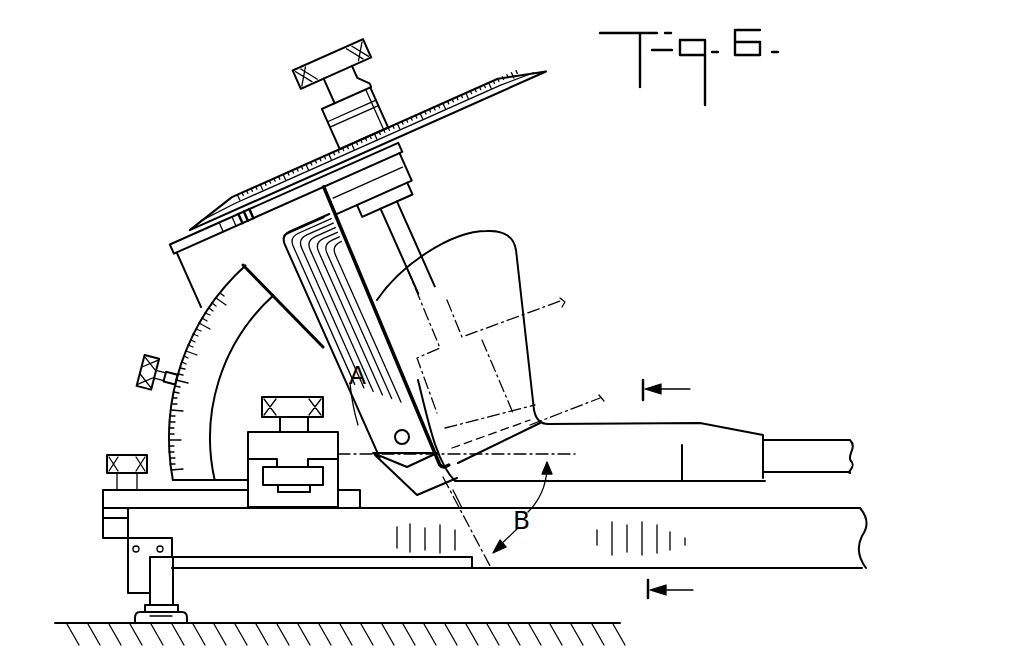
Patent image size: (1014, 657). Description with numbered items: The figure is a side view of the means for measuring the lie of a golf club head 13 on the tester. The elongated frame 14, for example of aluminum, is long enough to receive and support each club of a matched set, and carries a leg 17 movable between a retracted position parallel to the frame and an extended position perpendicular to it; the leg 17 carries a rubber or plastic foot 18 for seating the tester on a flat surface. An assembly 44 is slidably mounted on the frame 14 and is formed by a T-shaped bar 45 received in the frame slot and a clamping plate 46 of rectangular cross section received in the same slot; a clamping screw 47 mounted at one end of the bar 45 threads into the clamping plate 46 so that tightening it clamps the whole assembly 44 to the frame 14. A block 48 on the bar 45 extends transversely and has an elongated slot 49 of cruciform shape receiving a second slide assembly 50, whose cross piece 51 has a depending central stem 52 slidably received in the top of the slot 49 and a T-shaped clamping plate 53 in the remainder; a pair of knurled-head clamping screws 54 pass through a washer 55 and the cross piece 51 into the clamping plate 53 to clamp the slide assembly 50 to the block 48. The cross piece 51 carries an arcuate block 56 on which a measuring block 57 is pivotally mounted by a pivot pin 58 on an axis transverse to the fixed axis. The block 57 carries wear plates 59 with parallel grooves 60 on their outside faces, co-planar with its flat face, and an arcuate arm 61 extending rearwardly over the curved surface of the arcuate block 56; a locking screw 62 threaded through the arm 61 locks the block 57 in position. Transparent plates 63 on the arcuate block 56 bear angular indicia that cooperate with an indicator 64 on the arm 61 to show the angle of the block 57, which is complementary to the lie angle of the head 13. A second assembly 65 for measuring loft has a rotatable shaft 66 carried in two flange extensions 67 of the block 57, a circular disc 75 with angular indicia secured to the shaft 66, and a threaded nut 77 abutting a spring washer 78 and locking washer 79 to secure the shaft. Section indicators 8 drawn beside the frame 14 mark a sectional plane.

The section line 8- 8 is at (678, 491).
The golf club head 13 is at (512, 262).
The elongated frame 14 is at (576, 548).
The leg 17 is at (165, 585).
The foot 18 is at (140, 612).
The assembly 44 is at (166, 372).
The T-shaped bar 45 is at (106, 497).
The clamping plate 46 is at (112, 527).
The clamping screw 47 is at (127, 455).
The block 48 is at (258, 498).
The elongated slot 49 is at (291, 494).
The second slide assembly 50 is at (299, 470).
The cross piece 51 is at (358, 402).
The depending central stem 52 is at (303, 458).
The clamping plate 53 is at (312, 489).
The clamping screws 54 is at (305, 397).
The washer 55 is at (282, 410).
The arcuate block 56 is at (270, 353).
The measuring block 57 is at (380, 283).
The pivot pin 58 is at (409, 436).
The wear plates 59 is at (338, 251).
The parallel grooves 60 is at (288, 236).
The arcuate shaped arm 61 is at (182, 262).
The locking screw 62 is at (142, 372).
The transparent plates 63 is at (220, 292).
The indicator 64 is at (167, 360).
The second assembly 65 is at (352, 79).
The rotatable shaft 66 is at (407, 221).
The flange extensions 67 is at (416, 180).
The circular disc 75 is at (262, 177).
The threaded nut 77 is at (312, 70).
The spring washer 78 is at (372, 97).
The locking washer 79 is at (333, 118).